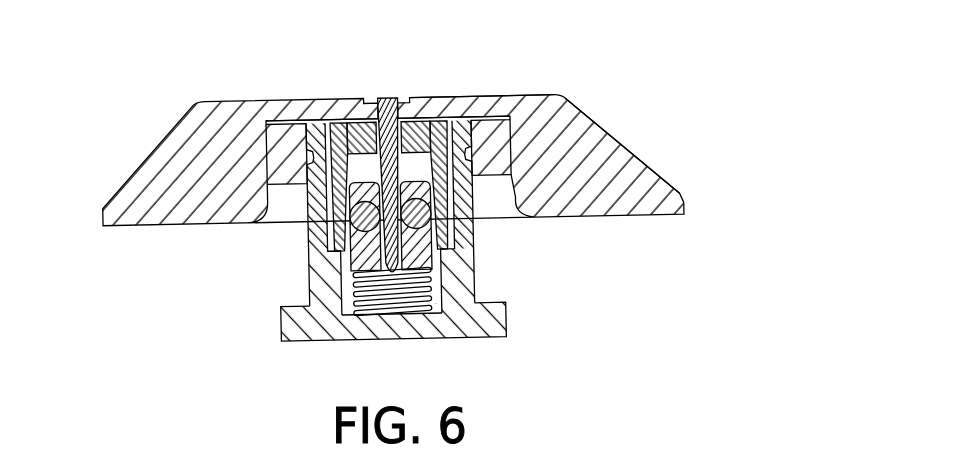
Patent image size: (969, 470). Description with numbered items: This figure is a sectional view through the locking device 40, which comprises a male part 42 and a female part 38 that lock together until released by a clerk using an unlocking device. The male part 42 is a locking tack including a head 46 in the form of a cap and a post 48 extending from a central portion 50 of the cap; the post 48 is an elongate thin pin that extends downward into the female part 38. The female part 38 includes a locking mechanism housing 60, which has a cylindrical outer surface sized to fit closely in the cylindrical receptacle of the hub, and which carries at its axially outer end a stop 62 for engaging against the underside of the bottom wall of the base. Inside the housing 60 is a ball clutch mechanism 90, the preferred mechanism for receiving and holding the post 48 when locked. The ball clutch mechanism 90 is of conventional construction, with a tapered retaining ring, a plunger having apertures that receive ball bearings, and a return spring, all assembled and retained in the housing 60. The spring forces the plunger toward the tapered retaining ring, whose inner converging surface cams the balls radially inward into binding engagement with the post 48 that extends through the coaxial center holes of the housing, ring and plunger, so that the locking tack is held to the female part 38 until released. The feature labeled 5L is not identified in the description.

The female part 38 is at (418, 209).
The locking device 40 is at (434, 147).
The male part 42 is at (160, 133).
The head 46 is at (540, 95).
The post 48 is at (420, 133).
The central portion 50 is at (317, 110).
The panel side edge 5L is at (607, 142).
The locking mechanism housing 60 is at (308, 282).
The stop 62 is at (508, 317).
The ball clutch mechanism 90 is at (348, 310).